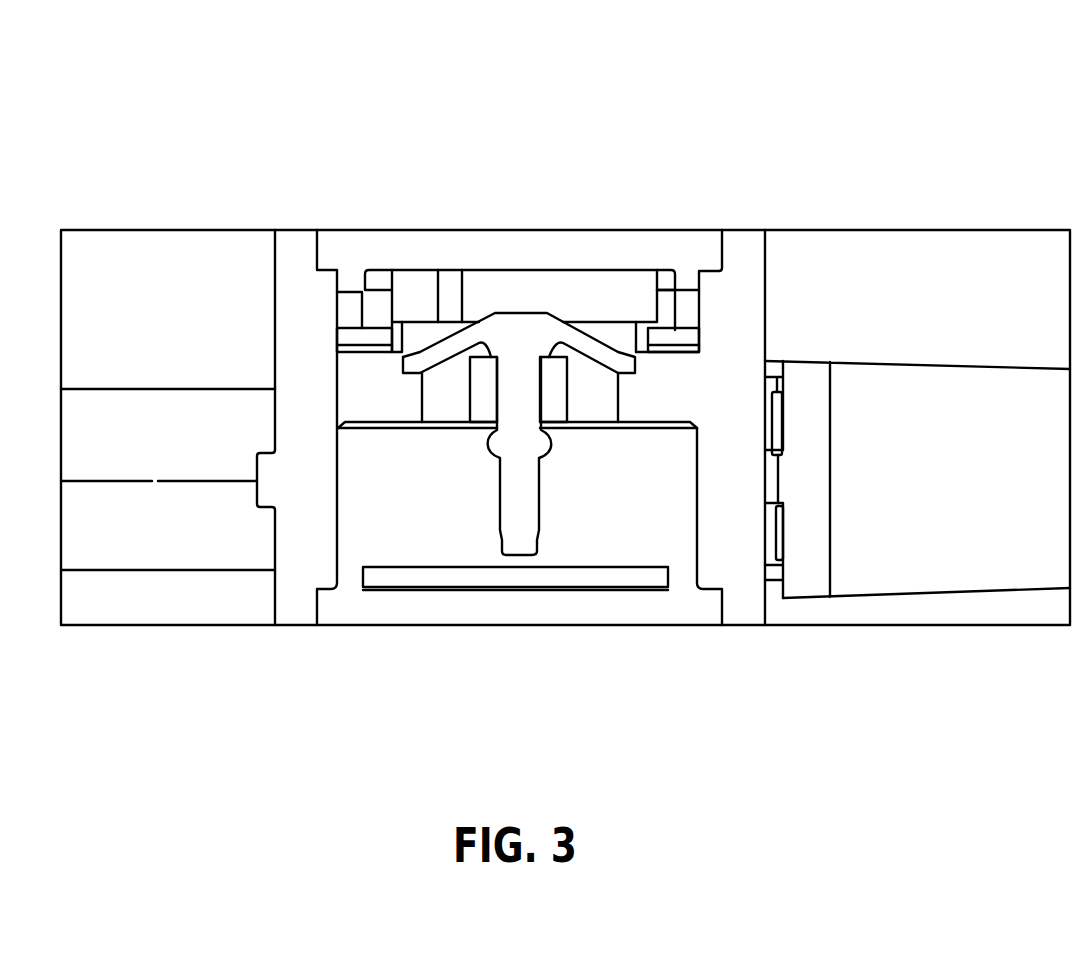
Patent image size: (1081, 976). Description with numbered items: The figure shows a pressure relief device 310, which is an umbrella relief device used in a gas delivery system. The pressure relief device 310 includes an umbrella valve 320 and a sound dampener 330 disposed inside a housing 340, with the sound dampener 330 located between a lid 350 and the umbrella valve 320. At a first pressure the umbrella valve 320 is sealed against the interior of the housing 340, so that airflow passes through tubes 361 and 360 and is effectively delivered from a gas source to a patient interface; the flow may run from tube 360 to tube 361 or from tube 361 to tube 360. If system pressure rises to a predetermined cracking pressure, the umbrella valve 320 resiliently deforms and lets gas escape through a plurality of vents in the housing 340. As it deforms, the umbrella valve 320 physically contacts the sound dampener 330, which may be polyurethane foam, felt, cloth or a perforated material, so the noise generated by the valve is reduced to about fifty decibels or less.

The pressure relief device 310 is at (704, 708).
The umbrella valve 320 is at (515, 332).
The sound dampener 330 is at (620, 303).
The housing 340 is at (288, 337).
The lid 350 is at (418, 250).
The tube 360 is at (155, 418).
The tube 361 is at (933, 410).